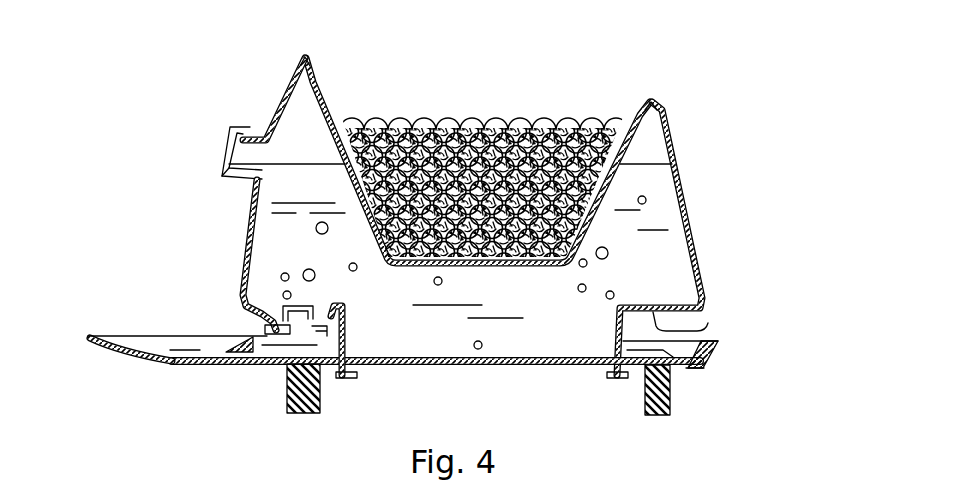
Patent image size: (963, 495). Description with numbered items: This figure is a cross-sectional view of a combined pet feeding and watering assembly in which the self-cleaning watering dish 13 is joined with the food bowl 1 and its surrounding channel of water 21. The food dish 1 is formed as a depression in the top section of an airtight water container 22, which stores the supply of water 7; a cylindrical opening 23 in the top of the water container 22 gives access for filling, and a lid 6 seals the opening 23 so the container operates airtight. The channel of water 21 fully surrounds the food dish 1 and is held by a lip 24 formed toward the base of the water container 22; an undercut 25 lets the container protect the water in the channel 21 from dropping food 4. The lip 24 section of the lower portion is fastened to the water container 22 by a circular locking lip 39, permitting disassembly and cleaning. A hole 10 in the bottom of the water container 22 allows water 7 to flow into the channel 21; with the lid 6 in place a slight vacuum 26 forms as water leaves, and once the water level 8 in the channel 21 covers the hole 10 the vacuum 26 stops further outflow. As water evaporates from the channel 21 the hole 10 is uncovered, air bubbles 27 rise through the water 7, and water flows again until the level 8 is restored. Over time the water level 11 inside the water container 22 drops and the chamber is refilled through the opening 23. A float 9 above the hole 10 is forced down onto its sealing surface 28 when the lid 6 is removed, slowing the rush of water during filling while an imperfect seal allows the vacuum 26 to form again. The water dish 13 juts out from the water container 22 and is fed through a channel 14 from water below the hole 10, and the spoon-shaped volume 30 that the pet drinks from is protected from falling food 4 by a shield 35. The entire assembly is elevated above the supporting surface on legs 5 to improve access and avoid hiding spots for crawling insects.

The food dish 1 is at (320, 108).
The food 4 is at (500, 130).
The legs 5 is at (325, 393).
The lid 6 is at (222, 175).
The water 7 is at (650, 258).
The water level 8 is at (690, 340).
The float 9 is at (318, 302).
The hole 10 is at (265, 367).
The water level 11 is at (652, 167).
The water dish 13 is at (167, 362).
The channel 14 is at (233, 367).
The channel of water 21 is at (695, 372).
The water container 22 is at (693, 203).
The cylindrical opening 23 is at (265, 130).
The lip 24 is at (722, 350).
The undercut 25 is at (665, 330).
The vacuum 26 is at (652, 130).
The air bubbles 27 is at (283, 293).
The sealing surface 28 is at (280, 325).
The volume that the pet drinks from 30 is at (133, 348).
The shield 35 is at (312, 57).
The locking lip 39 is at (605, 372).